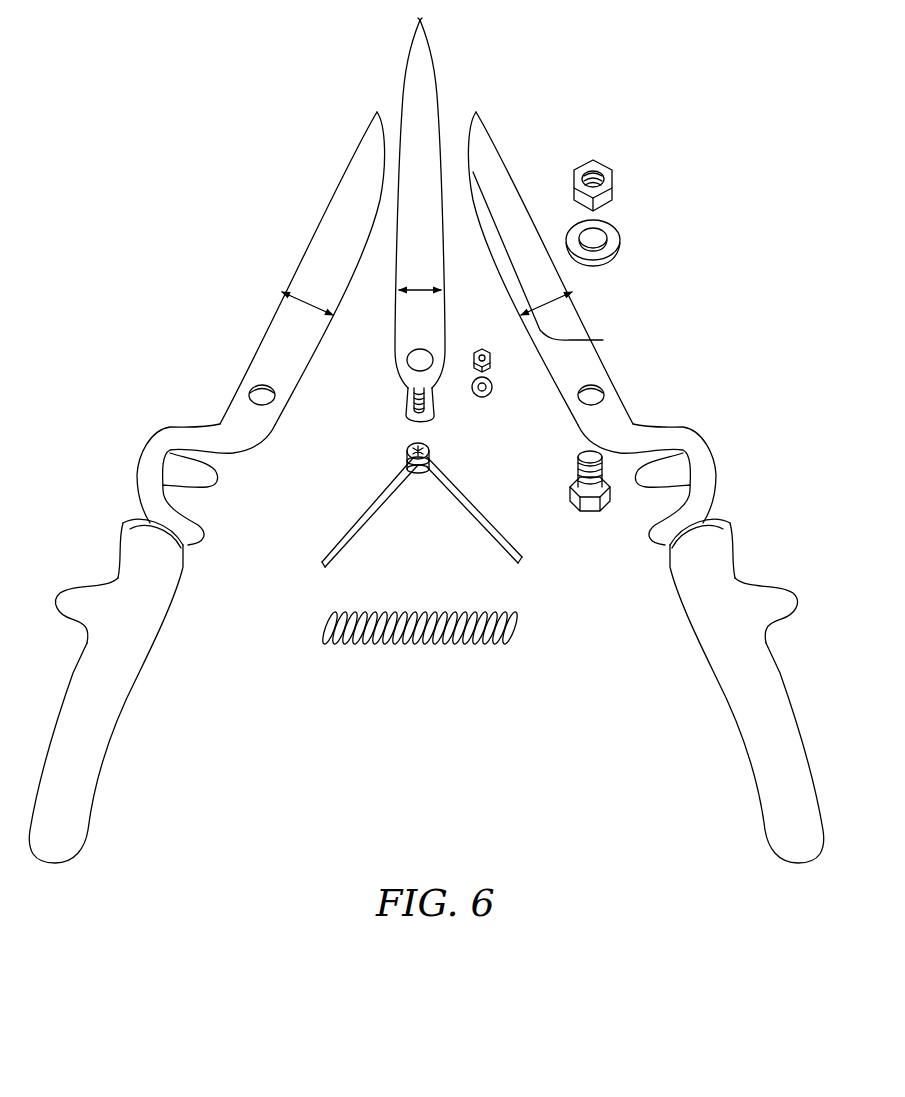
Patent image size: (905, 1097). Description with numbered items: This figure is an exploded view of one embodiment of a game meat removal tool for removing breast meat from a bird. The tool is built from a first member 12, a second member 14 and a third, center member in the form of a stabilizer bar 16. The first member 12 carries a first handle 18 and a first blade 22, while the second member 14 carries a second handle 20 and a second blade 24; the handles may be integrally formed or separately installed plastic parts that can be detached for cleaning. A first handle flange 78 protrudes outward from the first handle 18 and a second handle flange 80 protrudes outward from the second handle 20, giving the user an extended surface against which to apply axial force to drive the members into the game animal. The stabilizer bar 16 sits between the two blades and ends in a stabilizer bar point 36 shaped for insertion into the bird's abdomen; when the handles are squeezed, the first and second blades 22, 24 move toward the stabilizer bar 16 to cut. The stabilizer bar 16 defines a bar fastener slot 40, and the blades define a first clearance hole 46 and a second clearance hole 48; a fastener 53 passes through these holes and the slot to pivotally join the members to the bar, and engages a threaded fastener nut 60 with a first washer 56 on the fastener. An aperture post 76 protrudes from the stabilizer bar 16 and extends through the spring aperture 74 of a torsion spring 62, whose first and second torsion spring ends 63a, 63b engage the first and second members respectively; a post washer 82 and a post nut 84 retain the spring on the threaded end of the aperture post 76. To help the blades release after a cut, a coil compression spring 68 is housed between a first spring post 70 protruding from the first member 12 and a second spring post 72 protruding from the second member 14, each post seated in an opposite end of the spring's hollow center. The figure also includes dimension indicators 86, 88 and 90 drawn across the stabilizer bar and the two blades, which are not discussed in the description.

The first member 12 is at (148, 418).
The second member 14 is at (693, 418).
The stabilizer bar 16 is at (380, 260).
The first handle 18 is at (118, 722).
The second handle 20 is at (728, 708).
The first blade 22 is at (310, 263).
The second blade 24 is at (487, 148).
The stabilizer bar point 36 is at (428, 18).
The bar fastener slot 40 is at (406, 361).
The first clearance hole 46 is at (262, 380).
The second clearance hole 48 is at (607, 391).
The fastener 53 is at (574, 516).
The first washer 56 is at (622, 243).
The fastener nut 60 is at (615, 180).
The spring 62 is at (363, 530).
The first torsion spring end 63a is at (320, 567).
The second torsion spring end 63b is at (524, 566).
The compression spring 68 is at (425, 650).
The first spring post 70 is at (220, 478).
The second spring post 72 is at (643, 487).
The spring aperture 74 is at (424, 450).
The aperture post 76 is at (415, 395).
The first handle flange 78 is at (83, 597).
The second handle flange 80 is at (787, 597).
The post washer 82 is at (493, 387).
The post nut 84 is at (484, 350).
The width of center blade 86 is at (420, 287).
The width of first blade 88 is at (302, 307).
The width of second blade 90 is at (552, 307).